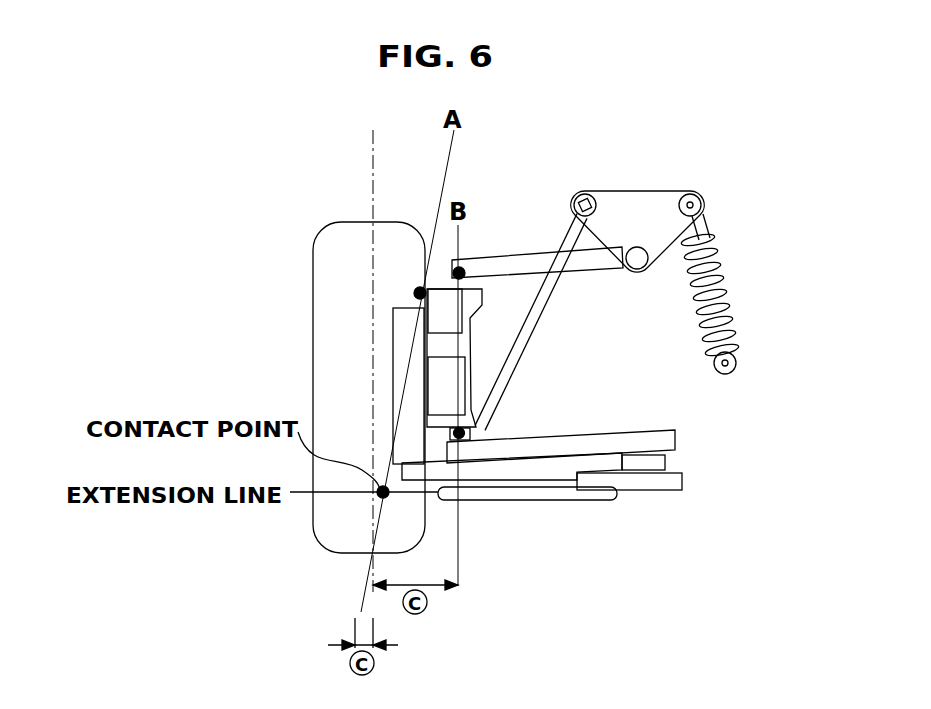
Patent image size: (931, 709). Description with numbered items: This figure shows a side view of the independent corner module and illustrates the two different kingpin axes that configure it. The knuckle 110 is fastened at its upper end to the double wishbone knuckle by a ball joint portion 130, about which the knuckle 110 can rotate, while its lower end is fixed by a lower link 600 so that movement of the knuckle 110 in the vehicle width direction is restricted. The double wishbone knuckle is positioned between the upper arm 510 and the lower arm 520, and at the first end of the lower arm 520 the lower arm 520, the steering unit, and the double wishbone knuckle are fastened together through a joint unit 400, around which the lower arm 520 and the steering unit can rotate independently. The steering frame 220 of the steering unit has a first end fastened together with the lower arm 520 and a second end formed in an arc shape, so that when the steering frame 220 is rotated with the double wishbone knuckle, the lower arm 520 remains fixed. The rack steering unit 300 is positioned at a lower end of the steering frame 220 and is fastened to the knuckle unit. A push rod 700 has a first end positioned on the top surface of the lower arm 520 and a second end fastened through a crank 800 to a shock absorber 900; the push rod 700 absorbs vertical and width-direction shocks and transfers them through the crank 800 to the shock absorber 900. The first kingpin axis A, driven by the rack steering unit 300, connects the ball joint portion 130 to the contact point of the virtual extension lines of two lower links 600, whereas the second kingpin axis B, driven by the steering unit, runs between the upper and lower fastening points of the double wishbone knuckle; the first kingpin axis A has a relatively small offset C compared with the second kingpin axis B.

The knuckle 110 is at (392, 345).
The ball joint portion 130 is at (418, 293).
The steering frame 220 is at (668, 462).
The rack steering unit 300 is at (672, 502).
The joint unit 400 is at (470, 428).
The upper arm 510 is at (580, 258).
The lower arm 520 is at (690, 440).
The lower link 600 is at (583, 500).
The push rod 700 is at (548, 296).
The crank 800 is at (635, 195).
The shock absorber 900 is at (732, 245).